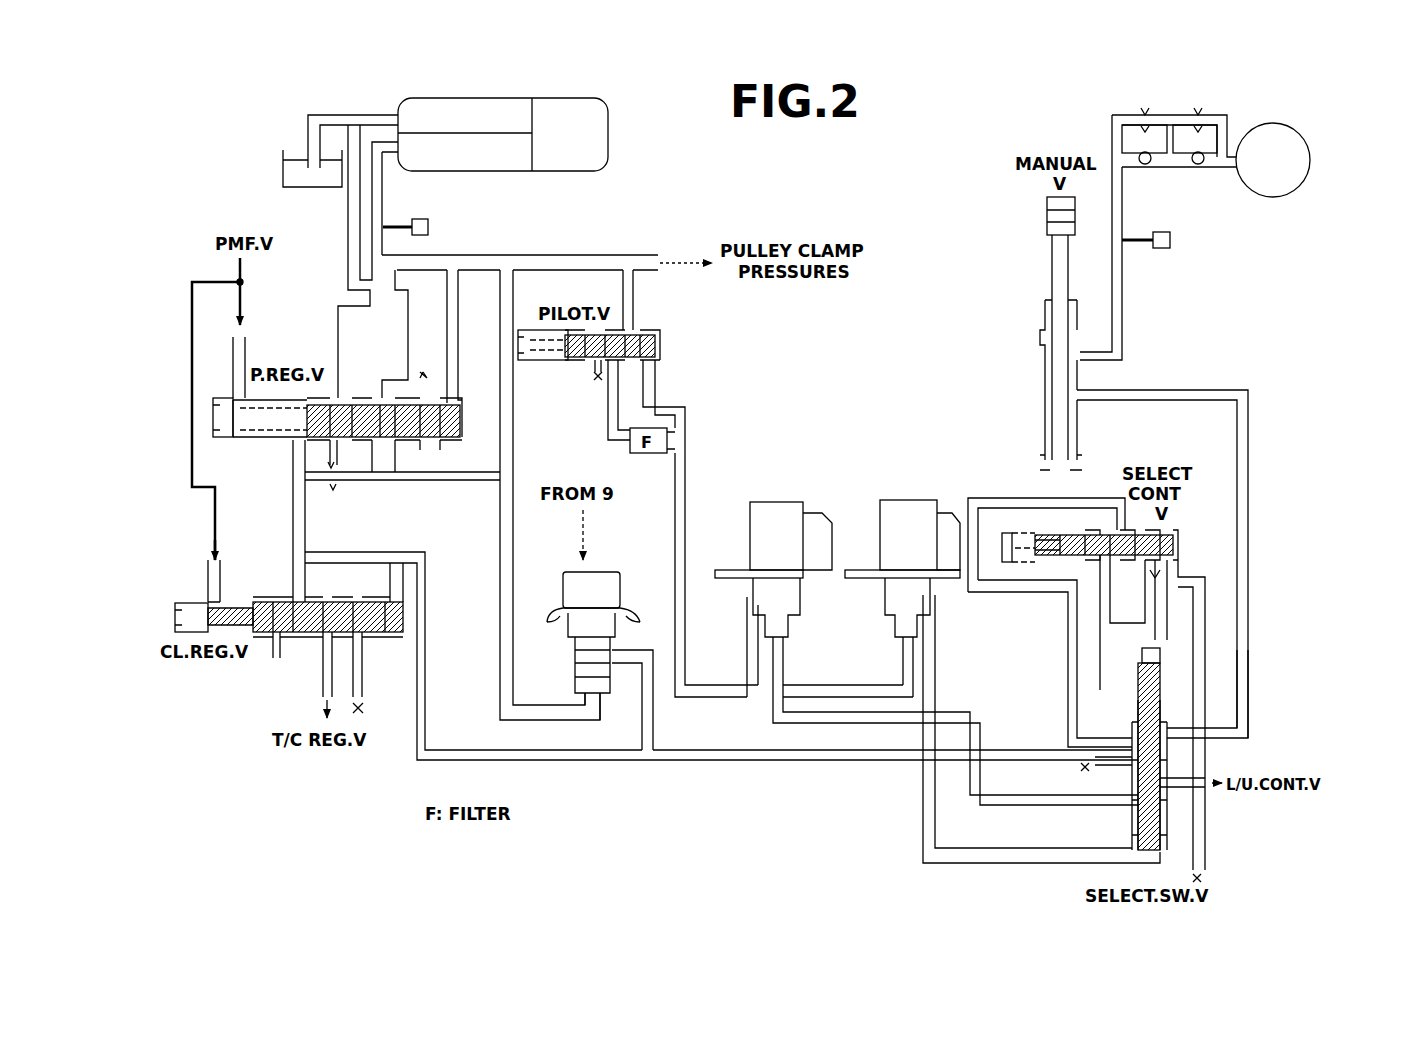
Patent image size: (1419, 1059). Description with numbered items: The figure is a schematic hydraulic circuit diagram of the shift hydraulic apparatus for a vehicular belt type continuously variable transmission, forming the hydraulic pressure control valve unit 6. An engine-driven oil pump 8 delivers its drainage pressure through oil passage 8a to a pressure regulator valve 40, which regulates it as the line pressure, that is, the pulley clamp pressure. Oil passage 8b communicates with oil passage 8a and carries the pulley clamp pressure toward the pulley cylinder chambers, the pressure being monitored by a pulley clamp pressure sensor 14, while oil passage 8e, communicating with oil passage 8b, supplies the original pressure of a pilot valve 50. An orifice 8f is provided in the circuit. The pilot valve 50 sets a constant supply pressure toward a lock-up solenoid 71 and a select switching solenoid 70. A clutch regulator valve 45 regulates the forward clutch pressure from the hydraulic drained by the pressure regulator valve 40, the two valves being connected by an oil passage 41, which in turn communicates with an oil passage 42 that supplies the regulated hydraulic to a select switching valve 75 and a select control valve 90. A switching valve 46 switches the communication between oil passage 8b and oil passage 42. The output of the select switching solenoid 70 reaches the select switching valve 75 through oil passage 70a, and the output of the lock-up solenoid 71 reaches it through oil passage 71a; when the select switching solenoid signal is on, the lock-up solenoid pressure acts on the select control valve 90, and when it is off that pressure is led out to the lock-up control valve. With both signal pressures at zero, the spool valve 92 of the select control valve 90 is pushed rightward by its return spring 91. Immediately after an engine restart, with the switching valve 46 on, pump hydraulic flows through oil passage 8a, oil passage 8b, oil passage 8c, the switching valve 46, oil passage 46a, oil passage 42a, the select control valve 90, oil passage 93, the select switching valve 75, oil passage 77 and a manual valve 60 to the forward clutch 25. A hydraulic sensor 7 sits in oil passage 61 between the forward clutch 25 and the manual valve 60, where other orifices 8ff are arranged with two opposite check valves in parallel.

The hydraulic pressure control valve unit 6 is at (738, 858).
The hydraulic sensor 7 is at (1172, 239).
The oil pump 8 is at (609, 112).
The oil passage 8a is at (380, 208).
The oil passage 8b is at (490, 258).
The oil passage 8c is at (514, 438).
The oil passage 8e is at (636, 302).
The orifice 8f is at (336, 491).
The other orifices 8ff is at (1152, 103).
The pulley clamp pressure sensor 14 is at (430, 226).
The forward clutch 25 is at (1276, 200).
The pressure regulator valve 40 is at (440, 445).
The oil passage 41 is at (293, 507).
The oil passage 42 is at (427, 612).
The oil passage 42a is at (1030, 598).
The clutch regulator valve 45 is at (268, 668).
The switching valve 46 is at (600, 570).
The oil passage 46a is at (655, 722).
The pilot valve 50 is at (662, 344).
The manual valve 60 is at (1037, 345).
The oil passage 61 is at (1125, 300).
The select switching solenoid 70 is at (905, 500).
The oil passage 70a is at (923, 820).
The lock-up solenoid 71 is at (780, 500).
The oil passage 71a is at (838, 726).
The select switching valve 75 is at (1125, 812).
The oil passage 77 is at (1250, 685).
The select control valve 90 is at (1212, 540).
The return spring 91 is at (1040, 532).
The spool valve 92 is at (1186, 545).
The oil passage 93 is at (1108, 666).